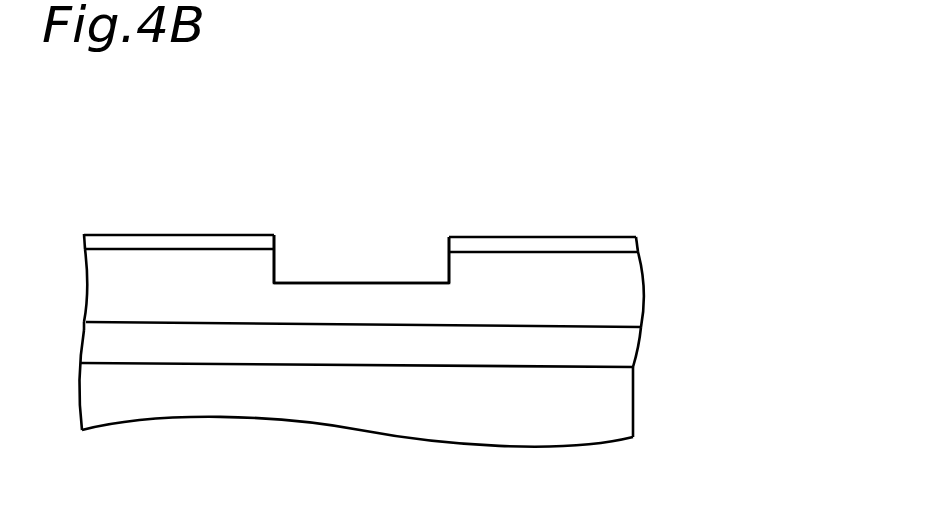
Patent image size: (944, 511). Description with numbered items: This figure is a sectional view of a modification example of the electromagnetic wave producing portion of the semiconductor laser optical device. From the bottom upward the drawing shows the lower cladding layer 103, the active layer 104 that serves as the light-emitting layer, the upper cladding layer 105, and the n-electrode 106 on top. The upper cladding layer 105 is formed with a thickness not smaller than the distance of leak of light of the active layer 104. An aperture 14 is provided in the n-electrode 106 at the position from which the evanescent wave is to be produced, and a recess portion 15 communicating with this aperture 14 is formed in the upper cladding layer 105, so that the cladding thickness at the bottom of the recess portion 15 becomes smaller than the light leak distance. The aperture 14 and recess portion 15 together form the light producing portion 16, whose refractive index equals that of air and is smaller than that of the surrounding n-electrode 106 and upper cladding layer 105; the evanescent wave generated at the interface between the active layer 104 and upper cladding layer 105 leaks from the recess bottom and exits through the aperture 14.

The aperture 14 is at (449, 244).
The recess portion 15 is at (449, 275).
The light producing portion 16 is at (316, 176).
The lower cladding layer 103 is at (623, 398).
The active layer 104 is at (617, 352).
The upper cladding layer 105 is at (624, 280).
The n-electrode 106 is at (620, 243).